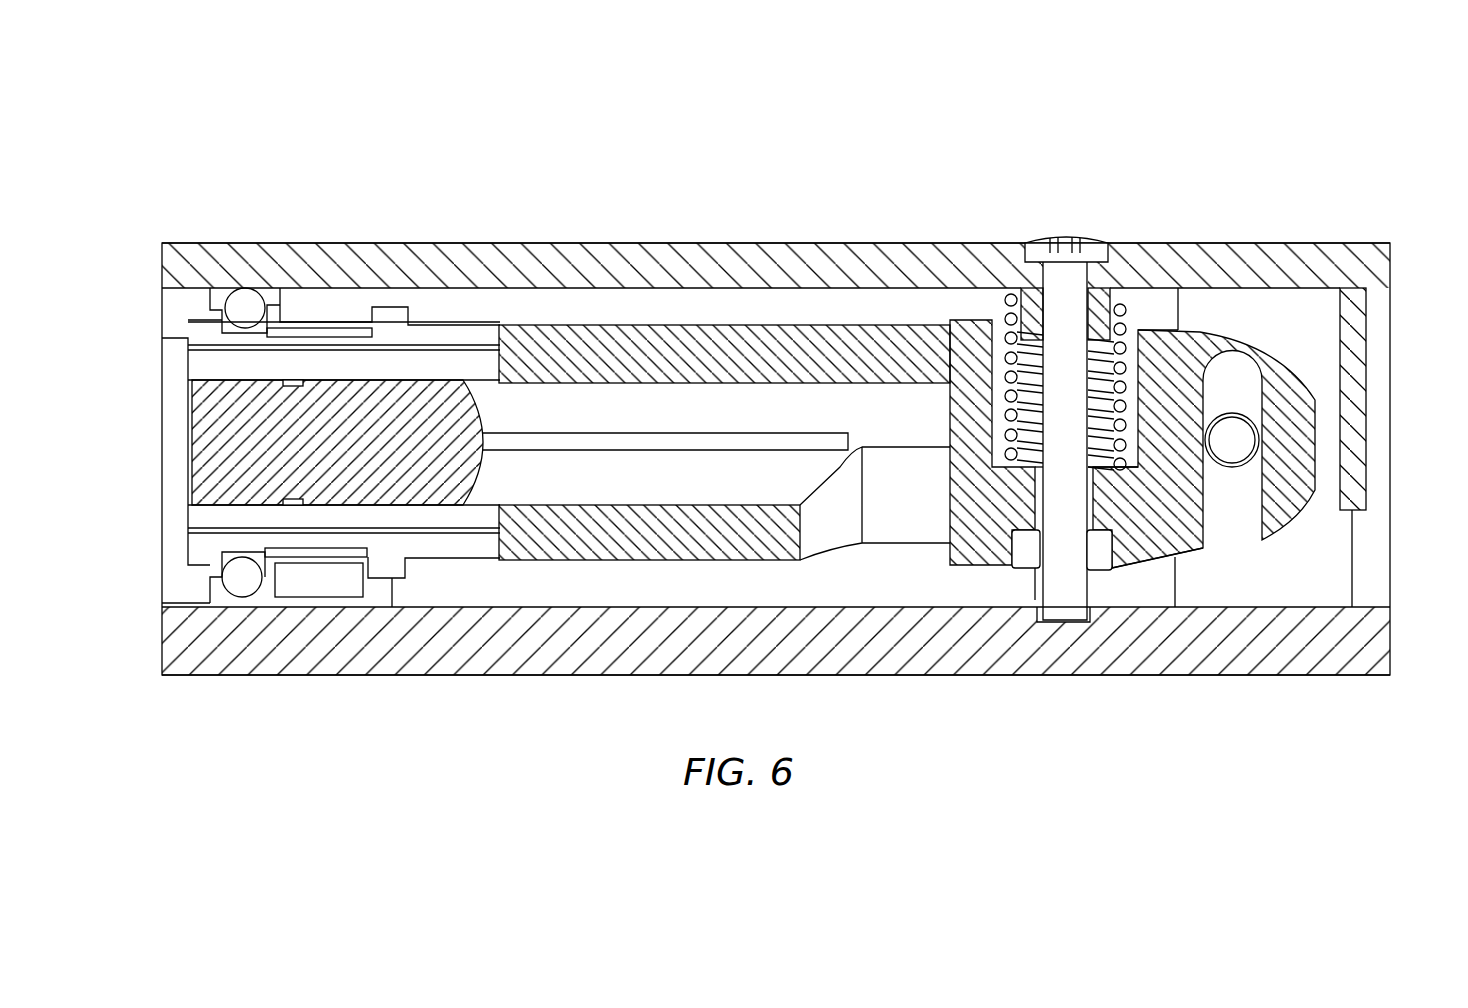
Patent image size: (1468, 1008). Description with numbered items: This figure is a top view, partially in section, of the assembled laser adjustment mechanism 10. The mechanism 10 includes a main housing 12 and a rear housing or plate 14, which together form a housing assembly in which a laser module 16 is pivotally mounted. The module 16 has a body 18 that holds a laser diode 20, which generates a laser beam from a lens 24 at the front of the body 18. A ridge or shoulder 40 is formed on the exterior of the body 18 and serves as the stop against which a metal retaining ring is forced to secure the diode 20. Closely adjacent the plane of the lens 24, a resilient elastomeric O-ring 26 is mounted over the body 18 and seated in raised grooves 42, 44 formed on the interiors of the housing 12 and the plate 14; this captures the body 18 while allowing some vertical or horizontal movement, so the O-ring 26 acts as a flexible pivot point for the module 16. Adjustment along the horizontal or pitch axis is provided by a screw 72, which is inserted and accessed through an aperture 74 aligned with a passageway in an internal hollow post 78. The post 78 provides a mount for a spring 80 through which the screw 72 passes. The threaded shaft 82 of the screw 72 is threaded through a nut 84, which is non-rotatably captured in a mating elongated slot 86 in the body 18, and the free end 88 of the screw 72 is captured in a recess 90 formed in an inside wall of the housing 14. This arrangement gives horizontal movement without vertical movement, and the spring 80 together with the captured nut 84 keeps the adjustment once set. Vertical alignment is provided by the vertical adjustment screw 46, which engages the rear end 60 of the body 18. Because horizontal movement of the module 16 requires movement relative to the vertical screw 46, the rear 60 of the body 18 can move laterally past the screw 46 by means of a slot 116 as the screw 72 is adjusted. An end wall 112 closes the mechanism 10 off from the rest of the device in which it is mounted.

The laser adjustment mechanism 10 is at (912, 148).
The main housing 12 is at (683, 245).
The rear housing plate 14 is at (598, 670).
The laser module 16 is at (786, 320).
The module body 18 is at (637, 505).
The laser diode 20 is at (428, 375).
The lens 24 is at (190, 452).
The O-ring 26 is at (247, 292).
The shoulder 40 is at (392, 308).
The raised groove 42 is at (210, 302).
The raised groove 44 is at (210, 585).
The vertical adjustment screw 46 is at (1231, 475).
The rear end of the body 60 is at (1270, 362).
The horizontal adjustment screw 72 is at (1097, 234).
The aperture 74 is at (1028, 243).
The internal hollow post 78 is at (1100, 305).
The spring 80 is at (1008, 322).
The threaded shaft 82 is at (1079, 323).
The nut 84 is at (1105, 565).
The elongated slot 86 is at (1010, 548).
The free end of the screw 88 is at (1045, 585).
The recess 90 is at (1065, 618).
The end wall 112 is at (1366, 398).
The slot 116 is at (1203, 548).